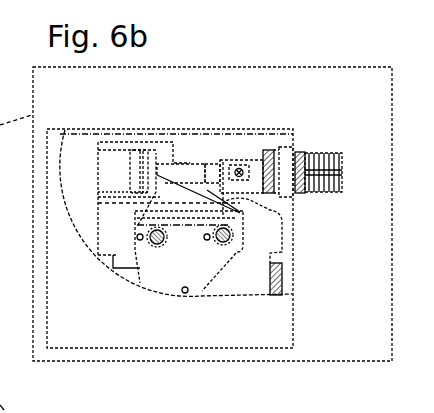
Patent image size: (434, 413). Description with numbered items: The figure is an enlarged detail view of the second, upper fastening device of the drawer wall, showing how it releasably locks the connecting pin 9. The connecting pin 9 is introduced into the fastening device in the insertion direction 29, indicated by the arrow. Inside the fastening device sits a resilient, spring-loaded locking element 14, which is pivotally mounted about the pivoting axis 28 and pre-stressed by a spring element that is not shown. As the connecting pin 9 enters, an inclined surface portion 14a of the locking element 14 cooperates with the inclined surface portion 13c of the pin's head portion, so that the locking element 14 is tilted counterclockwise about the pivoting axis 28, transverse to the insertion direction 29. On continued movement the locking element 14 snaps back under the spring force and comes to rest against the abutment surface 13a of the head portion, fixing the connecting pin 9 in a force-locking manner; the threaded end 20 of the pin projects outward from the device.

The connecting pin 9 is at (221, 153).
The abutment surface 13a is at (162, 150).
The inclined surface portion 13c is at (146, 193).
The locking element 14 is at (155, 277).
The inclined surface portion 14a is at (199, 197).
The threaded portion 20 is at (320, 193).
The pivoting axis 28 is at (229, 238).
The insertion direction 29 is at (332, 111).